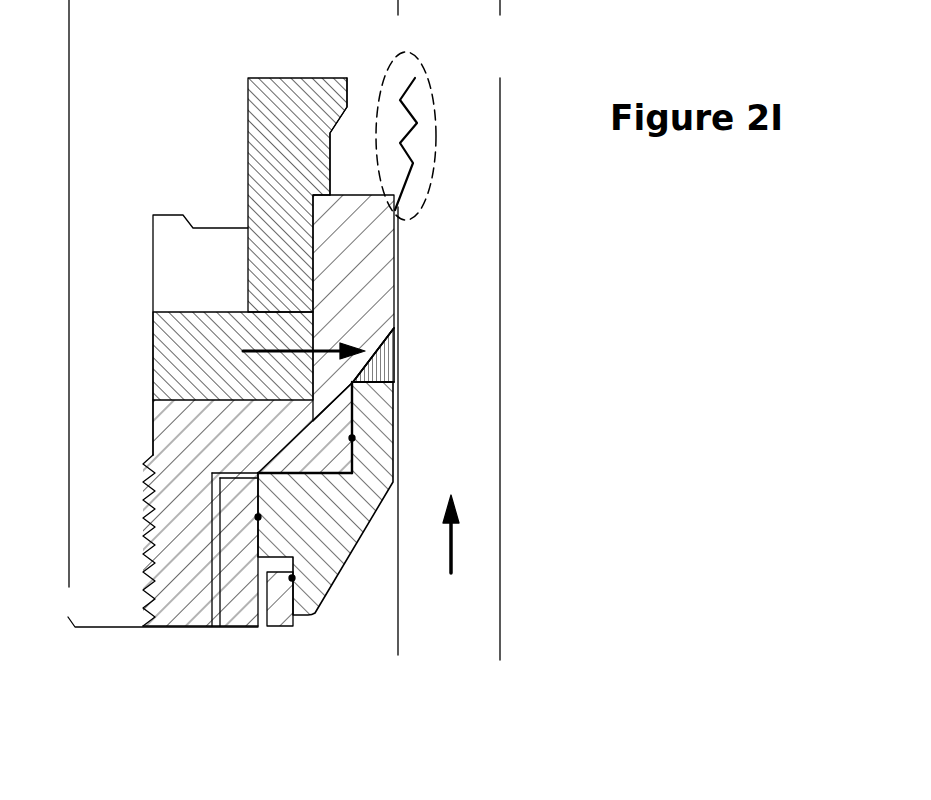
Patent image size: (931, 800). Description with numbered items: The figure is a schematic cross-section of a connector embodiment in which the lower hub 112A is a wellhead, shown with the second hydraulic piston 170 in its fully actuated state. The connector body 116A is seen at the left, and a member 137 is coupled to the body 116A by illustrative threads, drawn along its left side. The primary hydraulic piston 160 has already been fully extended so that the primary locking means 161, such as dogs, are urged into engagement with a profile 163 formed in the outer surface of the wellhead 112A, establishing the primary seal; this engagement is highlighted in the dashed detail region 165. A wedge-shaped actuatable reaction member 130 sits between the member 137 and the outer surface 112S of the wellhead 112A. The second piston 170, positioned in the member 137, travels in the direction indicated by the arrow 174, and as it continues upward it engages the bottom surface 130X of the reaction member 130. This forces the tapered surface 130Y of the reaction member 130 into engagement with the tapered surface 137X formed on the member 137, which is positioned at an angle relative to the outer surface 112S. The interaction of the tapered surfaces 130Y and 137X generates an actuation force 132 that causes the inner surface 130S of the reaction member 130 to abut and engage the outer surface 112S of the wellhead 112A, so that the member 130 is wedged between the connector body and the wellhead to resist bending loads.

The body 116A is at (145, 125).
The hydraulic piston 160 is at (285, 118).
The primary locking means 161 is at (363, 108).
The detail region 165 is at (427, 80).
The profile 163 is at (410, 130).
The lower hub 112A is at (485, 97).
The outer surface 112S is at (397, 570).
The tapered surface 137X is at (378, 350).
The actuation force 132 is at (288, 346).
The actuatable reaction member 130 is at (397, 340).
The inner surface 130S is at (397, 355).
The tapered surface 130Y is at (397, 368).
The bottom surface 130X is at (393, 388).
The member 137 is at (190, 587).
The second hydraulic piston 170 is at (338, 543).
The arrow 174 is at (453, 542).